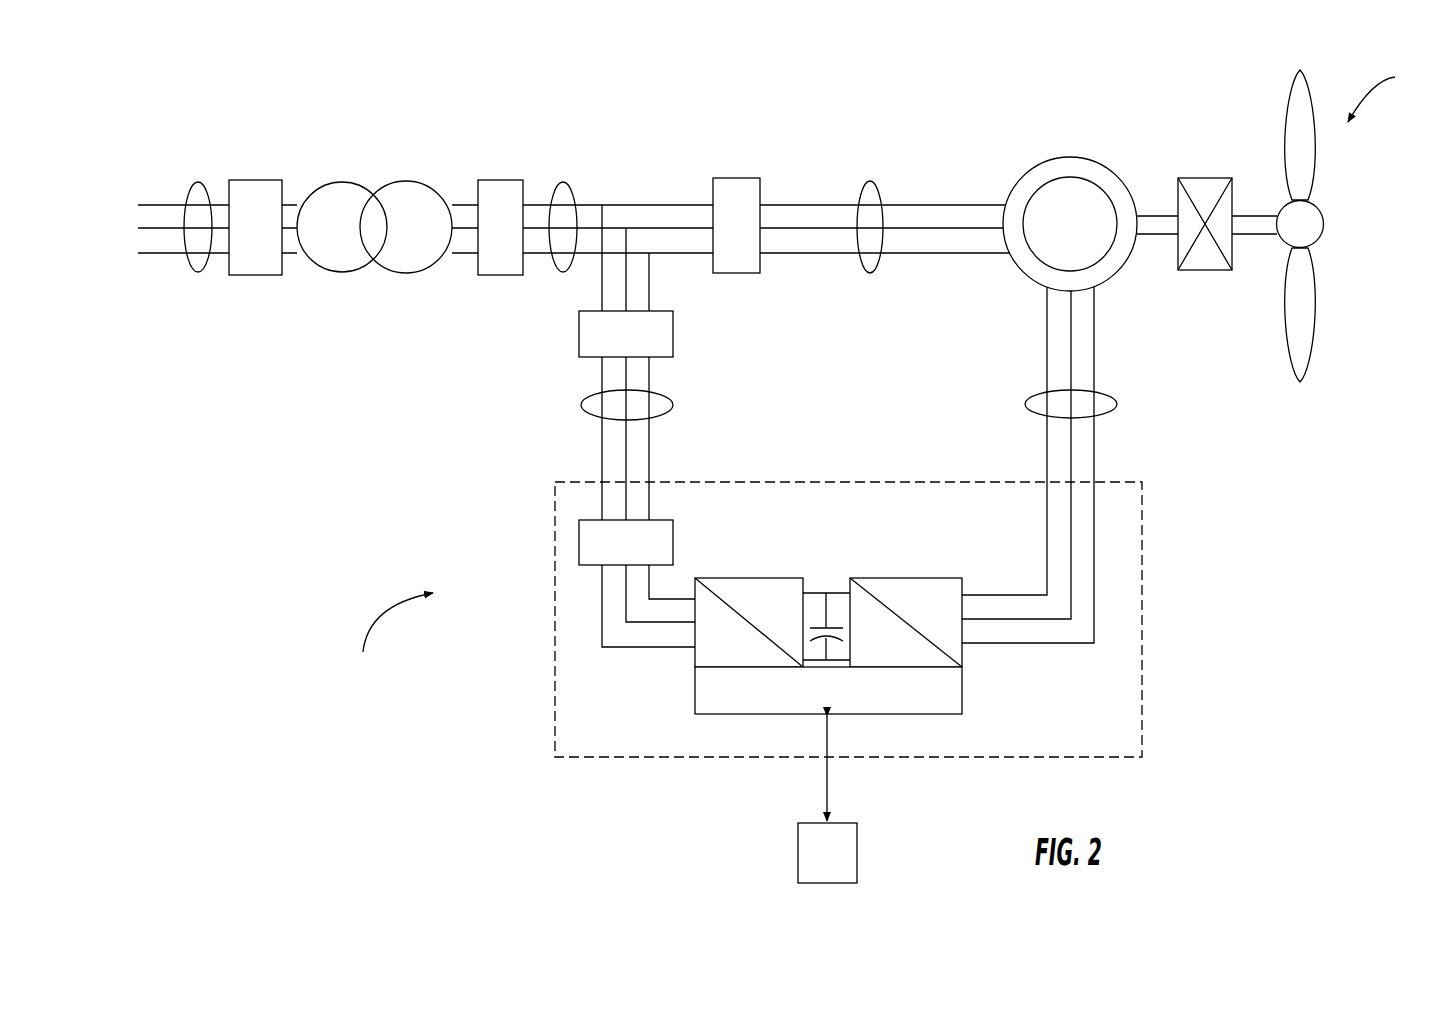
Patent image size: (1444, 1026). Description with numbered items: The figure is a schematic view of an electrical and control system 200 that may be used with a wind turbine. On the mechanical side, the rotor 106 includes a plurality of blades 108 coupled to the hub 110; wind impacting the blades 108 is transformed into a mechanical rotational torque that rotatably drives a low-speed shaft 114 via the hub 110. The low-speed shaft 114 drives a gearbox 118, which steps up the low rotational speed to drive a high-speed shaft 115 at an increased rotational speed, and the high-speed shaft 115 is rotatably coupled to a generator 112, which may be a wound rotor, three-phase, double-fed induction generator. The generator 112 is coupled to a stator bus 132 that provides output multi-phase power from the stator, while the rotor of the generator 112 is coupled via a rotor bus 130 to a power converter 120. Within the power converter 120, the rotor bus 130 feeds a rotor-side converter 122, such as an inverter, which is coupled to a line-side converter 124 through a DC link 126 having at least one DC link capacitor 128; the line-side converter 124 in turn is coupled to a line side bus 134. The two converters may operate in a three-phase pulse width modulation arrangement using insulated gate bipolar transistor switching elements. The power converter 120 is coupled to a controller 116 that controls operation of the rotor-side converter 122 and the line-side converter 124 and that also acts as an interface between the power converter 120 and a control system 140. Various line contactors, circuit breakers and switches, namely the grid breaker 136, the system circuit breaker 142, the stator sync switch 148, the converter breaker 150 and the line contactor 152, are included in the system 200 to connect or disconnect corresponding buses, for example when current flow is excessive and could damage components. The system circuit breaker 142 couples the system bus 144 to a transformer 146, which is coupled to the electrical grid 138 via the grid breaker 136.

The rotor 106 is at (1388, 90).
The blades 108 is at (1315, 160).
The hub 110 is at (1324, 230).
The generator 112 is at (1070, 157).
The low-speed shaft 114 is at (1255, 236).
The high-speed shaft 115 is at (1162, 236).
The controller 116 is at (750, 714).
The gearbox 118 is at (1208, 178).
The power converter 120 is at (1148, 580).
The rotor-side converter 122 is at (962, 655).
The line-side converter 124 is at (695, 657).
The DC link 126 is at (840, 592).
The DC link capacitor 128 is at (818, 628).
The rotor bus 130 is at (1117, 403).
The stator bus 132 is at (870, 182).
The line side bus 134 is at (581, 403).
The grid breaker 136 is at (264, 180).
The electrical grid 138 is at (199, 181).
The control system 140 is at (857, 842).
The system circuit breaker 142 is at (512, 180).
The system bus 144 is at (565, 182).
The transformer 146 is at (424, 181).
The stator sync switch 148 is at (743, 178).
The converter breaker 150 is at (579, 334).
The line contactor 152 is at (579, 538).
The electrical and control system 200 is at (390, 642).